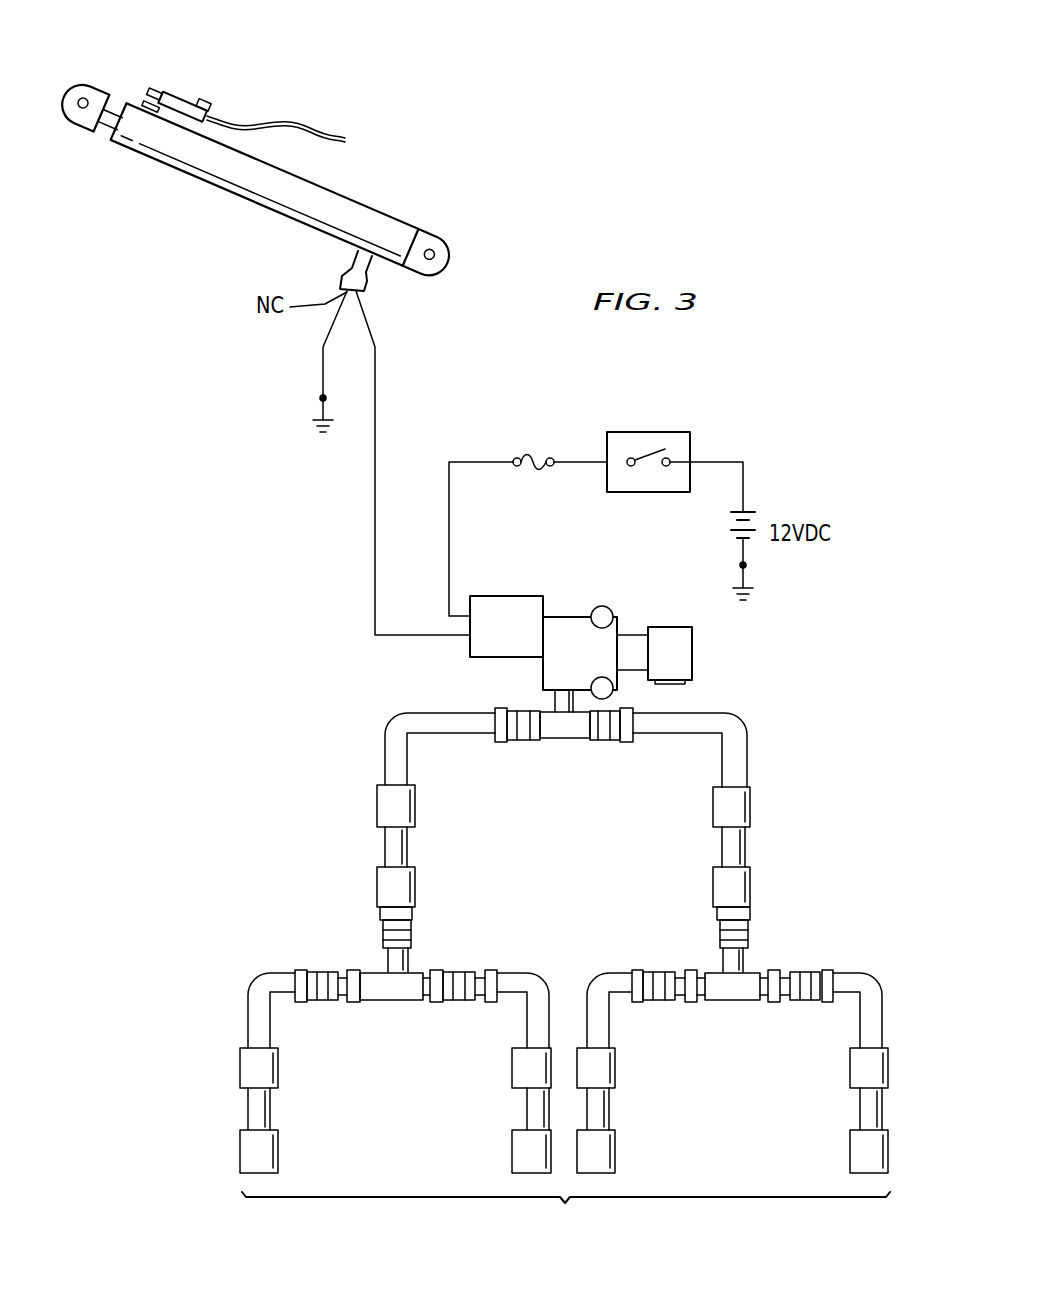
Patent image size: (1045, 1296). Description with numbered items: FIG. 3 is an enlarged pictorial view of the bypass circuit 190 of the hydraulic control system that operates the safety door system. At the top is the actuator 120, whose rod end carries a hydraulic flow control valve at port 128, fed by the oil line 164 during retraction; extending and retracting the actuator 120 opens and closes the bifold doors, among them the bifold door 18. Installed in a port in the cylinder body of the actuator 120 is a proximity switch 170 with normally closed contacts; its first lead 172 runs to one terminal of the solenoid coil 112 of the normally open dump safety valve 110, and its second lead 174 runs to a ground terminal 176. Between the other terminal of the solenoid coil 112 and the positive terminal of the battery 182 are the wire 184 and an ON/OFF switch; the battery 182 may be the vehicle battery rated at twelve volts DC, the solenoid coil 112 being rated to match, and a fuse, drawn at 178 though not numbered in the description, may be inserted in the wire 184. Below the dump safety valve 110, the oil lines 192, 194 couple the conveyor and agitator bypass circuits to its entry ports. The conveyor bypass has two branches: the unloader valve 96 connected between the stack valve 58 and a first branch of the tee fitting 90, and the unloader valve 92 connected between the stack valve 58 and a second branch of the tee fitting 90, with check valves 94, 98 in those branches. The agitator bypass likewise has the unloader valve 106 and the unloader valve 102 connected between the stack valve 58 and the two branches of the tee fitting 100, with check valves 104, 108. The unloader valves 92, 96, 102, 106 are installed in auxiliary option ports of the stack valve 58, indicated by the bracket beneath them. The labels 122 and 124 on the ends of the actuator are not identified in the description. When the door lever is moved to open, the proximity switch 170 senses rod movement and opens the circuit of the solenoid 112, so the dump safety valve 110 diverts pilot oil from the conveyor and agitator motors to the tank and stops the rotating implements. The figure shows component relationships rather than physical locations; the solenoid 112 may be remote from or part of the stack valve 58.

The bifold door 18 is at (660, 432).
The stack valve 58 is at (566, 1215).
The tee fitting 90 is at (395, 1000).
The unloader valve 92 is at (240, 1155).
The check valve 94 is at (352, 968).
The unloader valve 96 is at (512, 1152).
The check valve 98 is at (441, 968).
The tee fitting 100 is at (730, 1000).
The unloader valve 102 is at (615, 1152).
The check valve 104 is at (688, 968).
The unloader valve 106 is at (850, 1152).
The check valve 108 is at (779, 968).
The normally open dump safety valve 110 is at (572, 615).
The solenoid coil 112 is at (500, 596).
The actuator 120 is at (185, 172).
The cylinder end mount 122 is at (436, 249).
The rod end mount 124 is at (88, 92).
The port 128 is at (172, 90).
The oil line 164 is at (306, 125).
The proximity switch 170 is at (370, 283).
The first lead 172 is at (372, 582).
The second lead 174 is at (322, 362).
The ground terminal 176 is at (318, 400).
The fuse 178 is at (540, 454).
The battery 182 is at (730, 523).
The wire 184 is at (480, 460).
The bypass circuit 190 is at (298, 865).
The oil line 192 is at (447, 735).
The oil line 194 is at (682, 735).